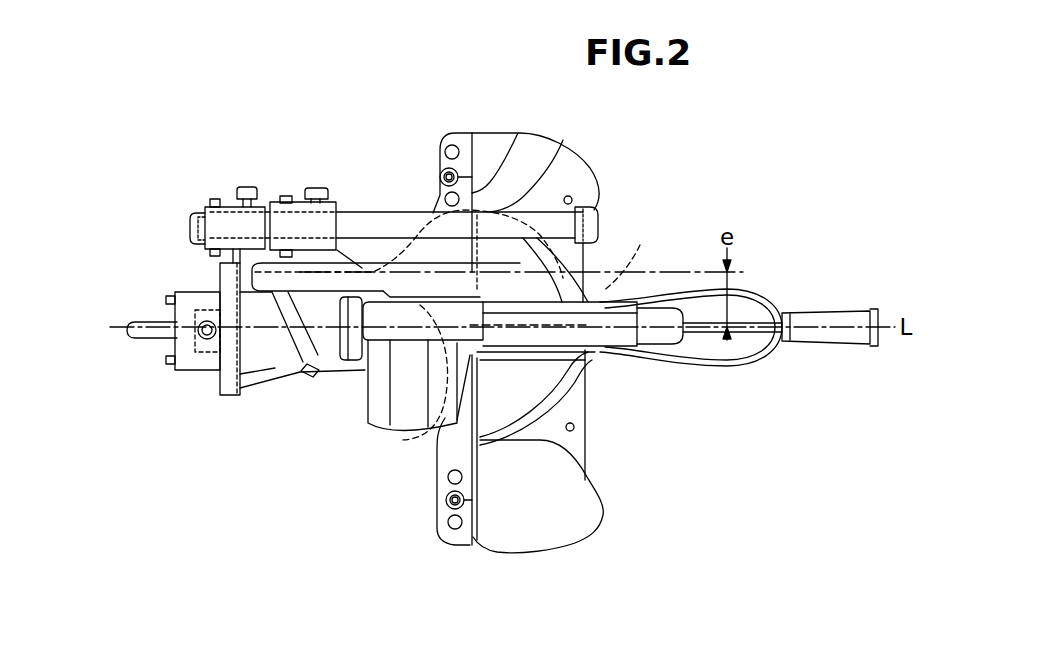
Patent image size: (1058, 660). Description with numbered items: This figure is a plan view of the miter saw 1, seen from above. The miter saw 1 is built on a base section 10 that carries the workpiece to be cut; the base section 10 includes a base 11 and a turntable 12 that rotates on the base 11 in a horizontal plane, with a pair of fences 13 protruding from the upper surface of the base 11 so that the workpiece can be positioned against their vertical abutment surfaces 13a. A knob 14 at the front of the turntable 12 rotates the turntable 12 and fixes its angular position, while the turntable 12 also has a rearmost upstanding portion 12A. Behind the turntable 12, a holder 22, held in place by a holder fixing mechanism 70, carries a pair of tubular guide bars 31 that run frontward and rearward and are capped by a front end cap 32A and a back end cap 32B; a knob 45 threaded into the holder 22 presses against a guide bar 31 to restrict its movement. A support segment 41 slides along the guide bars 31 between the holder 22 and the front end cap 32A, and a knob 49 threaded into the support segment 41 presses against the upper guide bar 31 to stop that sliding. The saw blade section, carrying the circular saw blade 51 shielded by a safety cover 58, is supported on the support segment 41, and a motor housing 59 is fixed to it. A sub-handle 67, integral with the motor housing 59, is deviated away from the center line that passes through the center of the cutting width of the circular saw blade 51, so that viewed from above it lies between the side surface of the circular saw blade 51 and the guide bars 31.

The miter saw 1 is at (389, 136).
The base section 10 is at (598, 463).
The base 11 is at (592, 527).
The turntable 12 is at (560, 392).
The rearmost upstanding portion 12A is at (229, 396).
The fences 13 is at (464, 190).
The vertical abutment surfaces 13a is at (472, 160).
The knob 14 is at (828, 313).
The holder 22 is at (213, 228).
The guide bars 31 is at (392, 212).
The front end cap 32A is at (598, 223).
The back end cap 32B is at (196, 226).
The support segment 41 is at (330, 212).
The knob 45 is at (248, 187).
The knob 49 is at (317, 188).
The circular saw blade 51 is at (627, 254).
The safety cover 58 is at (662, 346).
The motor housing 59 is at (373, 412).
The sub-handle 67 is at (330, 262).
The holder fixing mechanism 70 is at (201, 372).